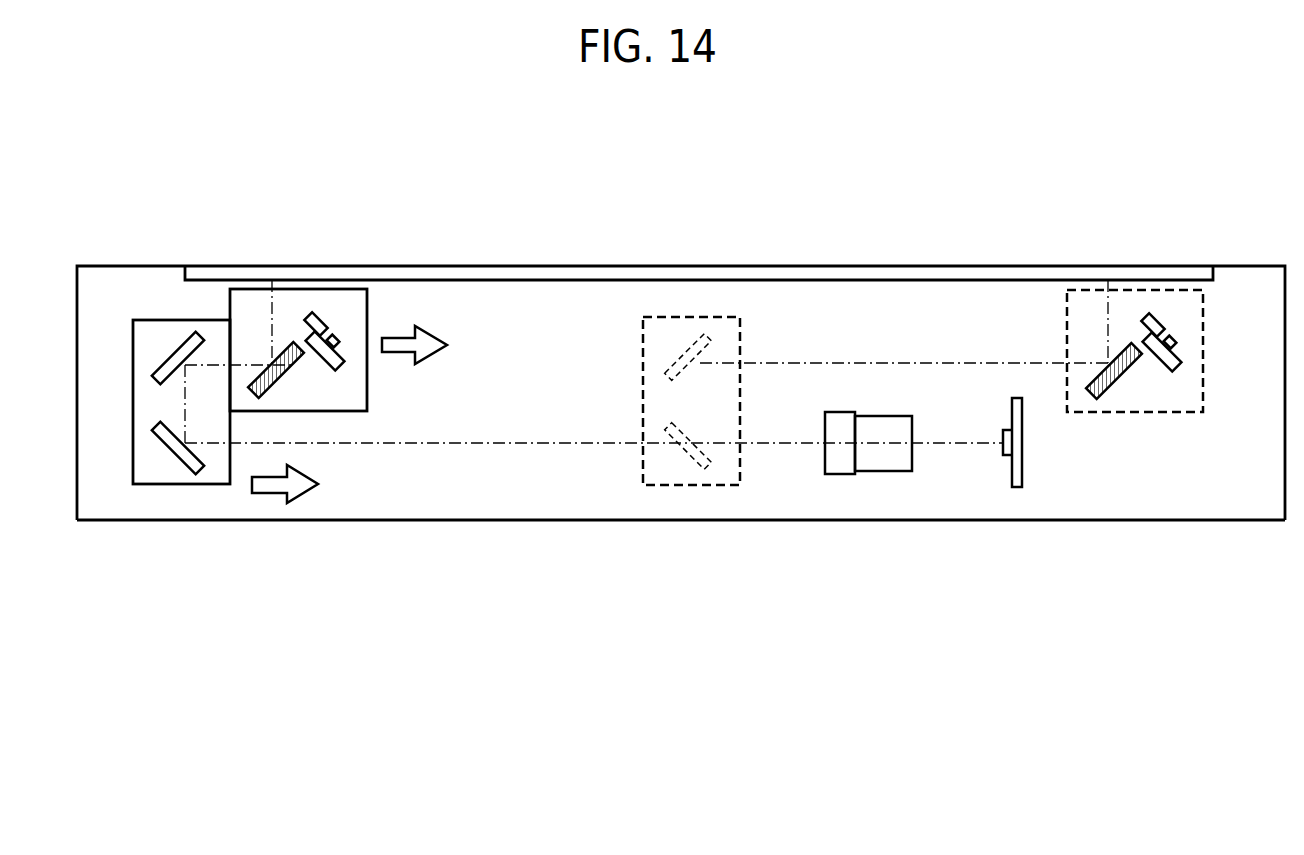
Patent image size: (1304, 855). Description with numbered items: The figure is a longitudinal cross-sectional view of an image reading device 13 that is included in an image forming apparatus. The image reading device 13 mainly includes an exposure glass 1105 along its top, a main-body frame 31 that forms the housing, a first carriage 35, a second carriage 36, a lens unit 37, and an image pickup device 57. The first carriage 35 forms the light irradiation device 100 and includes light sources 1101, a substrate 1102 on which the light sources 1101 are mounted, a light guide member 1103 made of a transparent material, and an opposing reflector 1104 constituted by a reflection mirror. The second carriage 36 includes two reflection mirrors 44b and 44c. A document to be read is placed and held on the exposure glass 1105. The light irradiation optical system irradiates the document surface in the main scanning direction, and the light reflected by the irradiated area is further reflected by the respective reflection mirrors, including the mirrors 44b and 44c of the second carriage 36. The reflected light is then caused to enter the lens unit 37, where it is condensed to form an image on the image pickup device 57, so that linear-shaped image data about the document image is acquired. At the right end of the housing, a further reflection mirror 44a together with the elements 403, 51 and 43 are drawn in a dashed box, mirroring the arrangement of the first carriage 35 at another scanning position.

The image reading device 13 is at (75, 371).
The main-body frame 31 is at (96, 522).
The exposure glass 1105 is at (552, 266).
The second carriage 36 is at (136, 320).
The reflection mirror 44b is at (177, 350).
The reflection mirror 44c is at (180, 468).
The first carriage 35 is at (368, 393).
The opposing reflector 1104 is at (294, 373).
The light guide member 1103 is at (317, 318).
The substrate 1102 is at (343, 356).
The light source 1101 is at (336, 339).
The light irradiation device 100 is at (392, 315).
The lens unit 37 is at (877, 475).
The image pickup device 57 is at (1023, 470).
The first mirror 44a is at (1118, 400).
The light source 403 is at (1154, 319).
The light source holder 51 is at (1180, 357).
The light emitting element 43 is at (1173, 339).